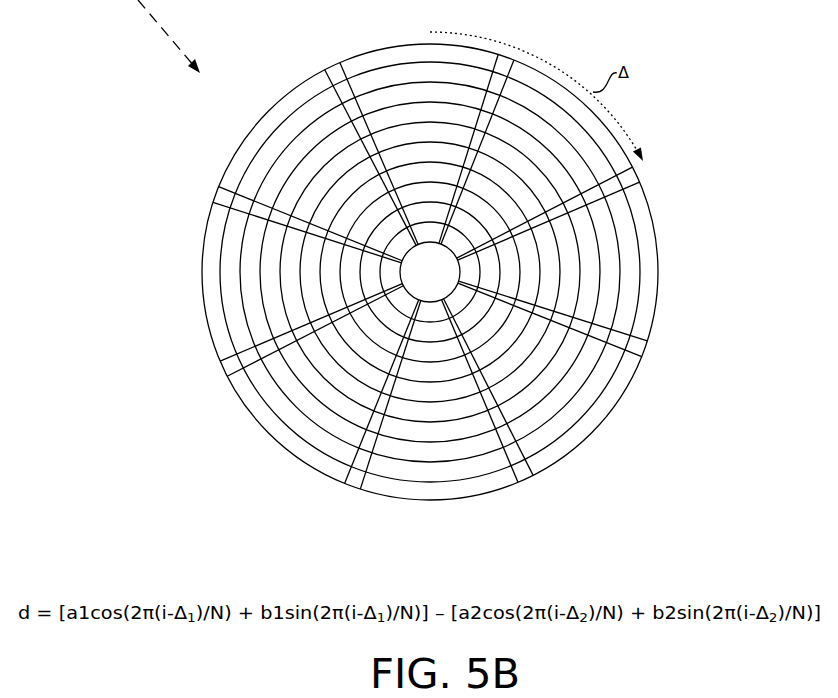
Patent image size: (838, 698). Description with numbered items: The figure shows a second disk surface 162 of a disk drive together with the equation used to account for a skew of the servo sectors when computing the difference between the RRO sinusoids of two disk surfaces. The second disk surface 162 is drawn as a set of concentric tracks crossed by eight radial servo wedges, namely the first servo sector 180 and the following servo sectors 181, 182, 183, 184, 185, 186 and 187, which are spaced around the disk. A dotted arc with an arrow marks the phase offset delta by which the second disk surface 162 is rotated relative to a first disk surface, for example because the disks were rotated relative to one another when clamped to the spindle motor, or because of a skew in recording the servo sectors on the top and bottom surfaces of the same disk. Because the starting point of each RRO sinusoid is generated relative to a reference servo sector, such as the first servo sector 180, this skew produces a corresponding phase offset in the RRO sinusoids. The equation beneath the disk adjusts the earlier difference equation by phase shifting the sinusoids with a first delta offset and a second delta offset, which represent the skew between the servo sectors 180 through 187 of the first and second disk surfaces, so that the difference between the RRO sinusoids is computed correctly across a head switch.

The second disk surface 162 is at (258, 89).
The first servo sector 180 is at (632, 177).
The servo sector 181 is at (637, 348).
The servo sector 182 is at (522, 475).
The servo sector 183 is at (353, 482).
The servo sector 184 is at (227, 365).
The servo sector 185 is at (218, 197).
The servo sector 186 is at (333, 70).
The servo sector 187 is at (505, 63).